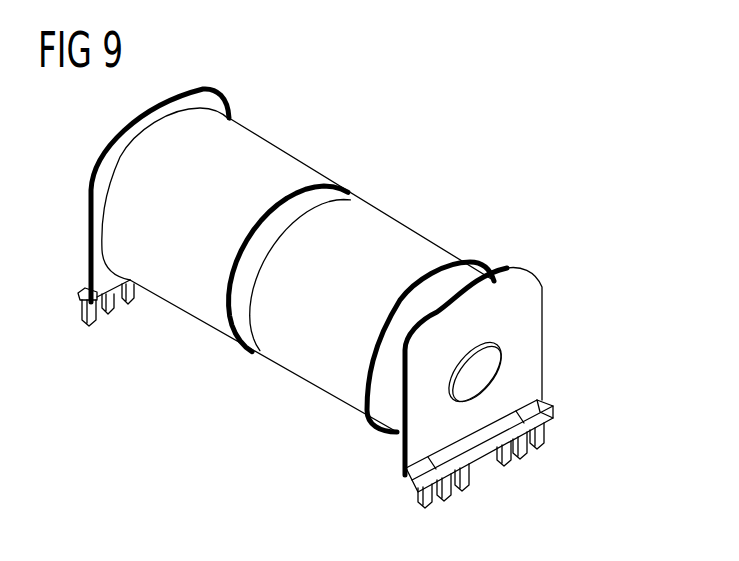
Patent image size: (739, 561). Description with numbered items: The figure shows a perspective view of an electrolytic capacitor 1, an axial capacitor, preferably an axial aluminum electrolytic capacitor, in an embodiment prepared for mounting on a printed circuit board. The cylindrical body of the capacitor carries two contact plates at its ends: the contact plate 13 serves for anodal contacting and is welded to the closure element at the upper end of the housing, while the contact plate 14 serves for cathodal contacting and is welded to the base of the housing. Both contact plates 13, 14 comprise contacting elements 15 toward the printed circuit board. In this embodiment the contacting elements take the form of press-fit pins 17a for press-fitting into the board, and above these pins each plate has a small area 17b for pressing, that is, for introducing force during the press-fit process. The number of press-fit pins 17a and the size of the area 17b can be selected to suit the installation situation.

The electrolytic capacitor 1 is at (447, 172).
The contact plate 13 is at (224, 110).
The contact plate 14 is at (532, 300).
The contacting elements 15 is at (545, 428).
The press-fit pins 17a is at (97, 322).
The small areas for pressing 17b is at (83, 287).